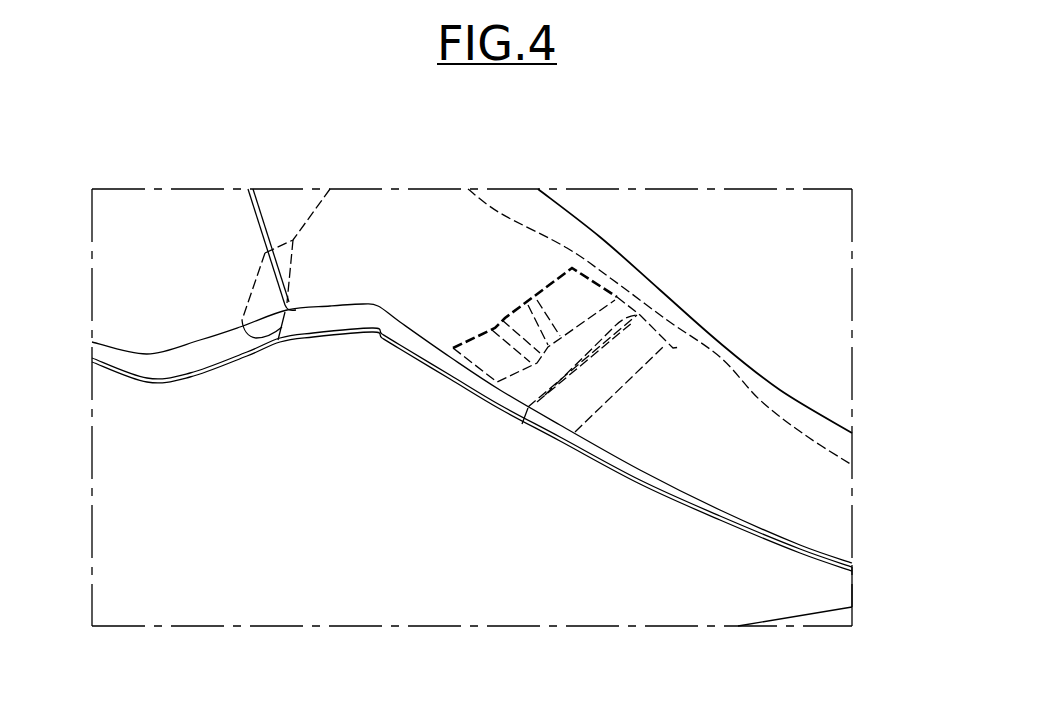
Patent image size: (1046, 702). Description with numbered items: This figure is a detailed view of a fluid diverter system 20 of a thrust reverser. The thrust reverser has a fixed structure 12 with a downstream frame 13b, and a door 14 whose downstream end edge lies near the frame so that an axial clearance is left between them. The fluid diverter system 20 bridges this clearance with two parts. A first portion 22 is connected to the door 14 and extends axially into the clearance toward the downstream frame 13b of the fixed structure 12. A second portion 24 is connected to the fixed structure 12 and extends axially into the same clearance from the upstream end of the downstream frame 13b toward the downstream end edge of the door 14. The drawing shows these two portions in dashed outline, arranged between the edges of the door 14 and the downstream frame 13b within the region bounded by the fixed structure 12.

The fixed structure 12 is at (864, 527).
The downstream frame 13b is at (762, 197).
The door 14 is at (668, 615).
The fluid diverter system 20 is at (506, 295).
The first portion 22 is at (575, 408).
The second portion 24 is at (567, 300).